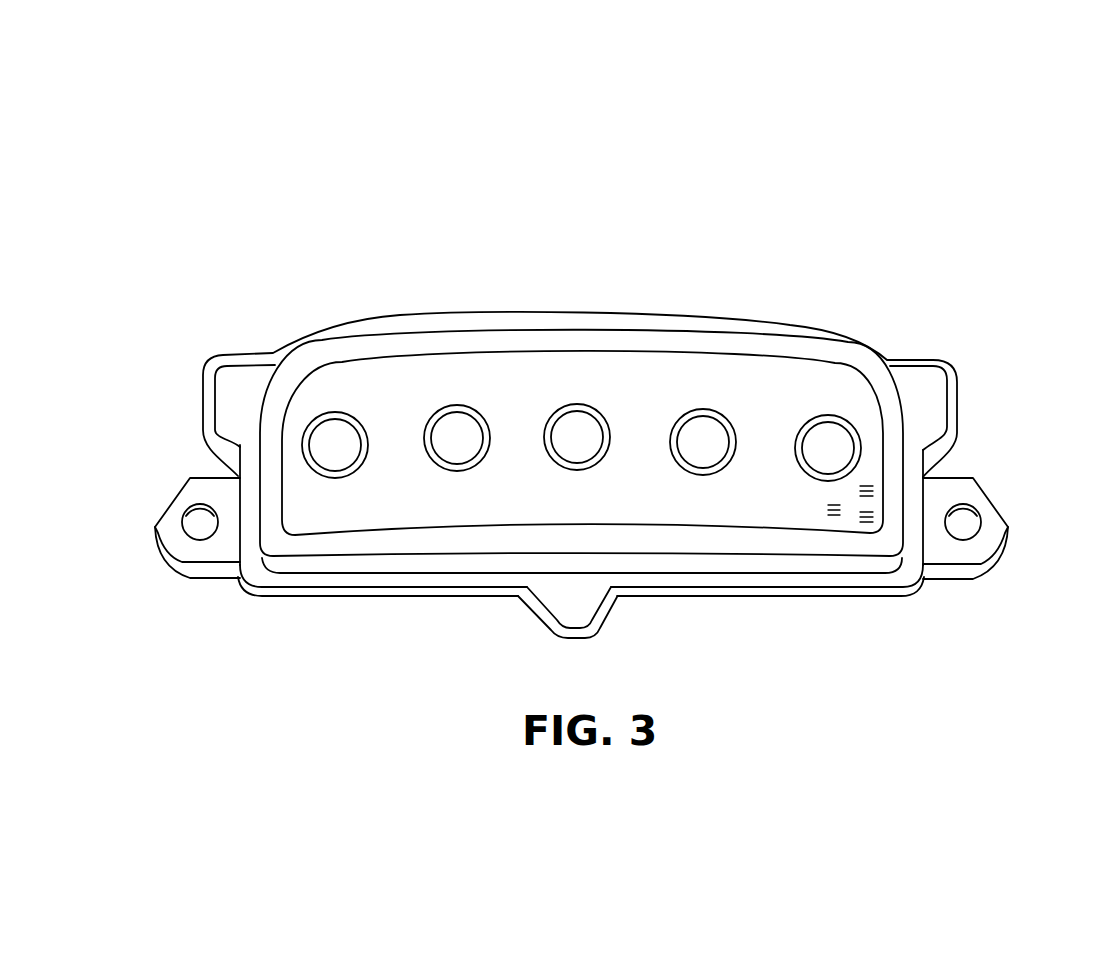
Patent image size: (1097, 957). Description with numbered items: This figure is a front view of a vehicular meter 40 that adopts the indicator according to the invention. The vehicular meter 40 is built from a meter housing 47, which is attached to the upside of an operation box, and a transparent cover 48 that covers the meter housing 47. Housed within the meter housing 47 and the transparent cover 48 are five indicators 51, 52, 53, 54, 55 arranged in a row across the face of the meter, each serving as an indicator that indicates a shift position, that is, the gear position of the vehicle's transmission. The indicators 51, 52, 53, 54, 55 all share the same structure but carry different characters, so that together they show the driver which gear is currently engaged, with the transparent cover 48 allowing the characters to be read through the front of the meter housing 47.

The vehicular meter 40 is at (243, 165).
The meter housing 47 is at (908, 382).
The transparent cover 48 is at (867, 512).
The indicator 51 is at (335, 400).
The indicator 52 is at (457, 393).
The indicator 53 is at (575, 392).
The indicator 54 is at (700, 397).
The indicator 55 is at (822, 407).